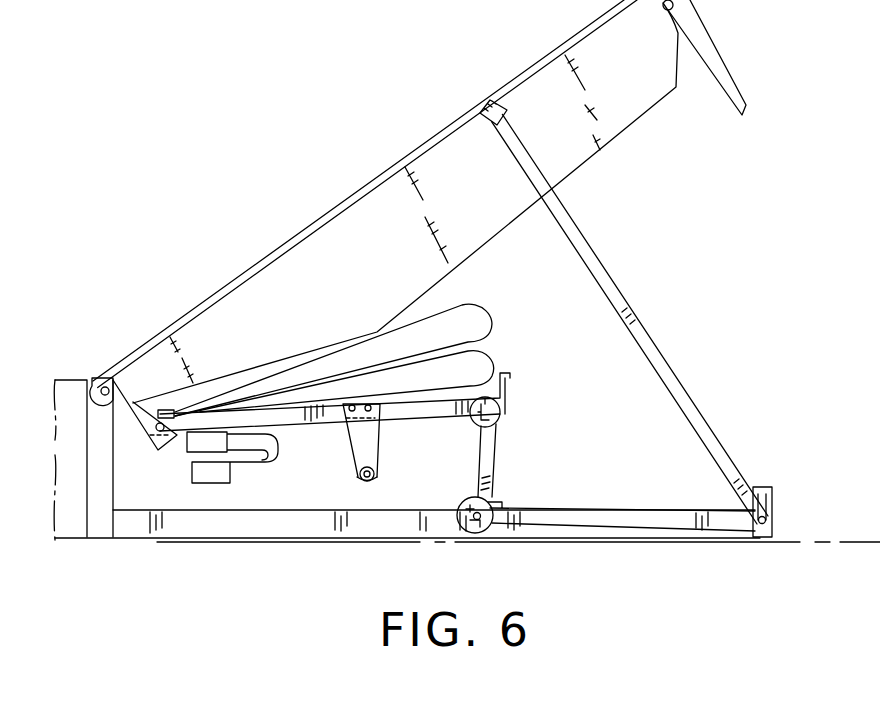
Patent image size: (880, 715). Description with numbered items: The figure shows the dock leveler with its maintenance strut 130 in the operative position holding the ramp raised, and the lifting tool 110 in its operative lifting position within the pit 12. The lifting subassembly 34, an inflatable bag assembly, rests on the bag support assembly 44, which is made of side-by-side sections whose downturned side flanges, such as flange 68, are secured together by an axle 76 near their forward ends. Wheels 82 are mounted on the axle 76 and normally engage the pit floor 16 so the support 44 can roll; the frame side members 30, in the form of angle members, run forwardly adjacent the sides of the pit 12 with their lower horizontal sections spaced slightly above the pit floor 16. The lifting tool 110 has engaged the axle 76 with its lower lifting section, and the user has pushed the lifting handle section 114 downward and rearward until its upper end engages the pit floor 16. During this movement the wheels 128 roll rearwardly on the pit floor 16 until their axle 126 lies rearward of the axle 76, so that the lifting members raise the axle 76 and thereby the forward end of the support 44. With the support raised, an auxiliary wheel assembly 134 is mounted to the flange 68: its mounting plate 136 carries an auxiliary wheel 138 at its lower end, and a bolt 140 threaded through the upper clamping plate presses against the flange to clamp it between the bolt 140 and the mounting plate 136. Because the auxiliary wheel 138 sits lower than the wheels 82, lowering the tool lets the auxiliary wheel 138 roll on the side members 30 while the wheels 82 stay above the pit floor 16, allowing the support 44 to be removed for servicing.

The pit 12 is at (595, 410).
The pit floor 16 is at (803, 533).
The side members 30 is at (249, 508).
The lifting subassembly 34 is at (534, 327).
The bag support assembly 44 is at (325, 426).
The downturned side flange 68 is at (414, 412).
The axle 76 is at (498, 406).
The wheels 82 is at (483, 432).
The lifting tool 110 is at (592, 467).
The lifting handle section 114 is at (663, 506).
The axle 126 is at (488, 526).
The wheels 128 is at (472, 535).
The maintenance strut 130 is at (657, 347).
The auxiliary wheel assembly 134 is at (385, 487).
The mounting plate 136 is at (378, 454).
The auxiliary wheel 138 is at (360, 479).
The bolt 140 is at (352, 408).